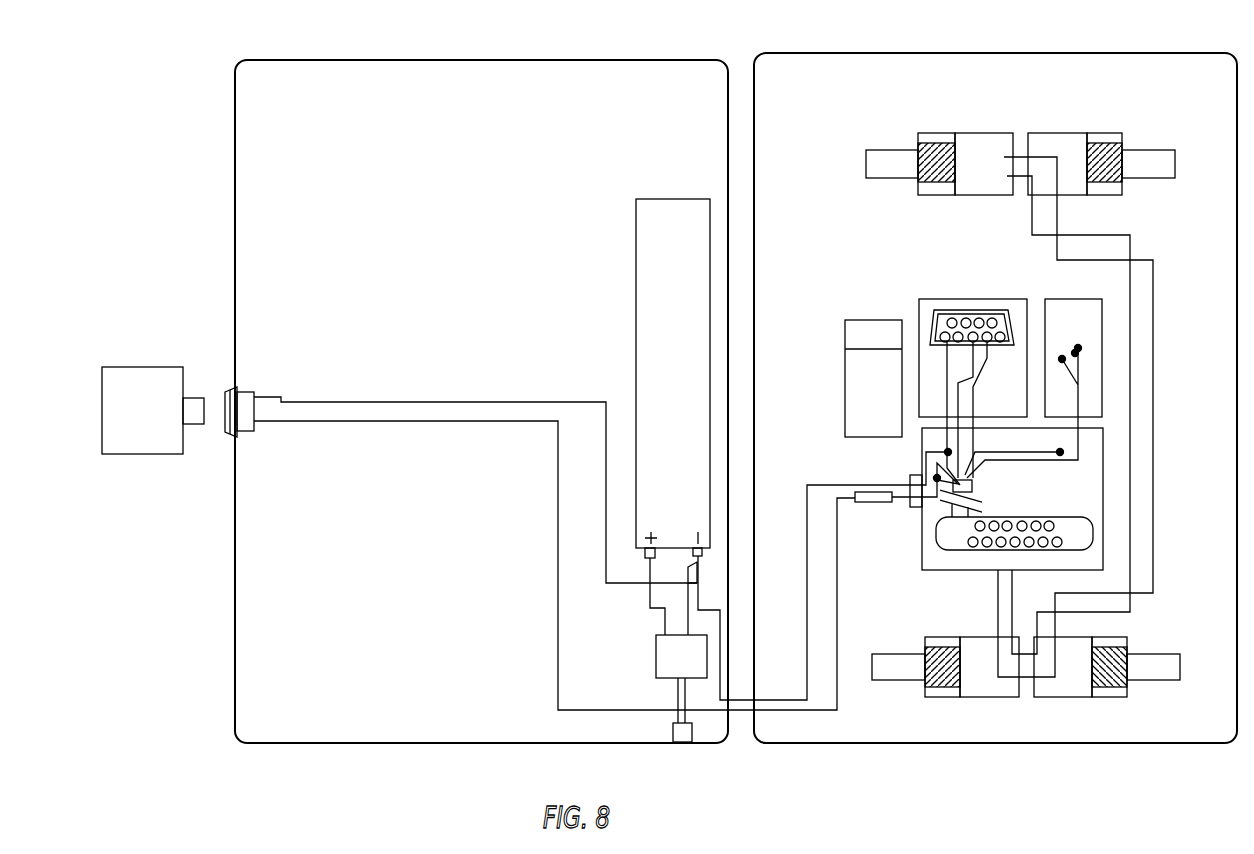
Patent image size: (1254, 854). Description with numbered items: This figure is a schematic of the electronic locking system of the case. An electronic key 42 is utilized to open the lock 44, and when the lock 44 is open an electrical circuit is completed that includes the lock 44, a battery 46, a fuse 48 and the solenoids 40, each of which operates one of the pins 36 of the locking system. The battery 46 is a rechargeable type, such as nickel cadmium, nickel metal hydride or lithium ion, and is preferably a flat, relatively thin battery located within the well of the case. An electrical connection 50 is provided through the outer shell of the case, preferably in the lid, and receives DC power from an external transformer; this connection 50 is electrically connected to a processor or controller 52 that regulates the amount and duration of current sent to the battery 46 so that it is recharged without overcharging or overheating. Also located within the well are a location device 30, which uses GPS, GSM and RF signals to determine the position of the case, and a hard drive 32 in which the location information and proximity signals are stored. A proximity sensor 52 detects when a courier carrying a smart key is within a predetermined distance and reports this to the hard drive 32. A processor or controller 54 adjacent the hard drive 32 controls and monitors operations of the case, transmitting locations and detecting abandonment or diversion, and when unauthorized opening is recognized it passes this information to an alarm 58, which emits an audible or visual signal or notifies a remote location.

The location device 30 is at (1083, 498).
The hard drive 32 is at (925, 298).
The pins 36 is at (875, 152).
The solenoids 40 is at (980, 137).
The electronic key 42 is at (132, 455).
The lock 44 is at (238, 390).
The battery 46 is at (640, 296).
The fuse 48 is at (872, 502).
The electrical connection 50 is at (683, 742).
The processor or controller / proximity sensor 52 is at (660, 660).
The processor or controller 54 is at (843, 395).
The alarm 58 is at (873, 318).